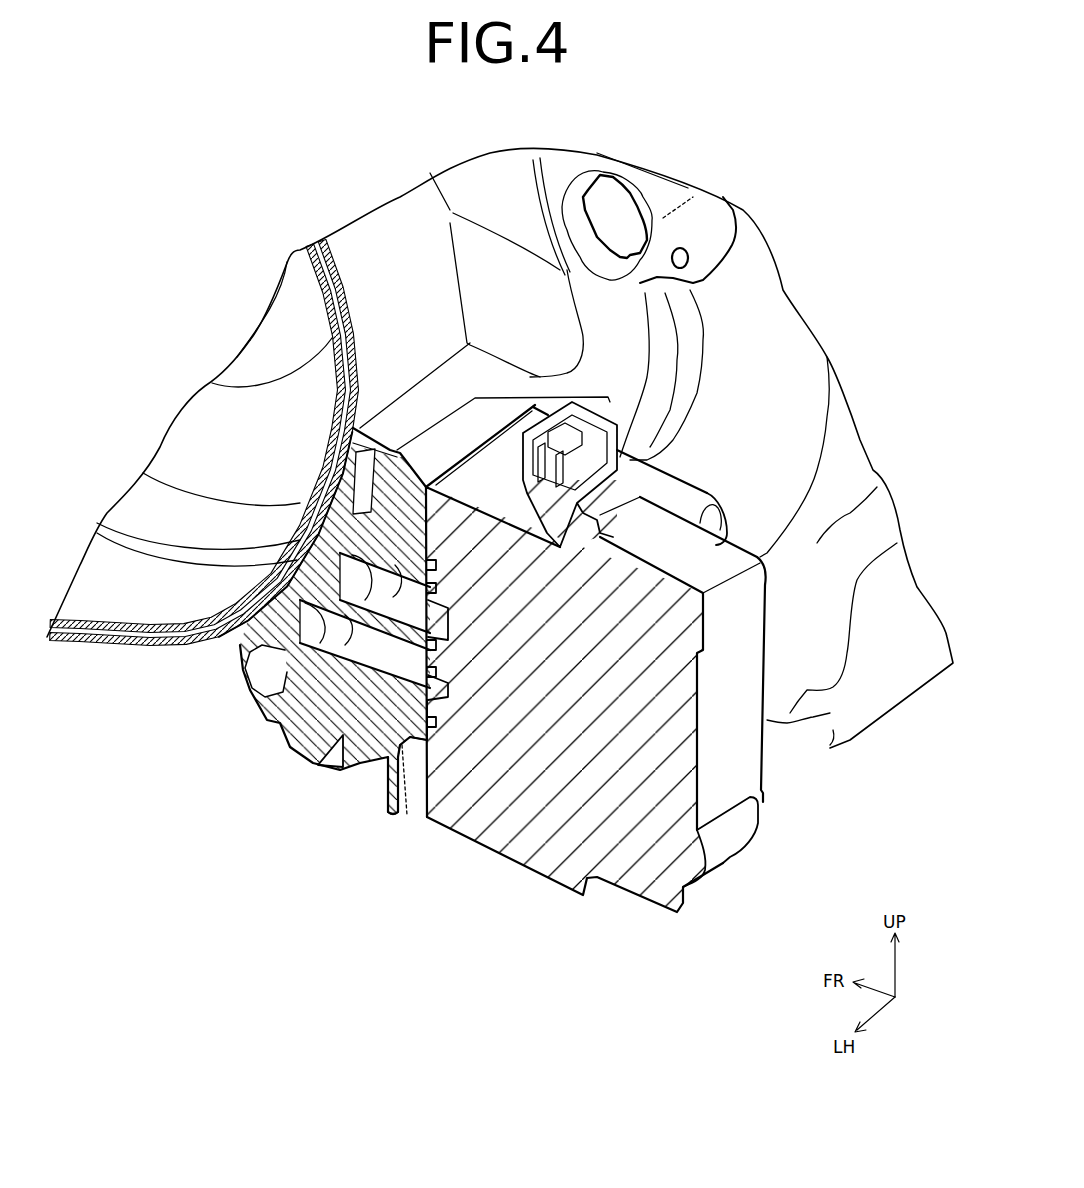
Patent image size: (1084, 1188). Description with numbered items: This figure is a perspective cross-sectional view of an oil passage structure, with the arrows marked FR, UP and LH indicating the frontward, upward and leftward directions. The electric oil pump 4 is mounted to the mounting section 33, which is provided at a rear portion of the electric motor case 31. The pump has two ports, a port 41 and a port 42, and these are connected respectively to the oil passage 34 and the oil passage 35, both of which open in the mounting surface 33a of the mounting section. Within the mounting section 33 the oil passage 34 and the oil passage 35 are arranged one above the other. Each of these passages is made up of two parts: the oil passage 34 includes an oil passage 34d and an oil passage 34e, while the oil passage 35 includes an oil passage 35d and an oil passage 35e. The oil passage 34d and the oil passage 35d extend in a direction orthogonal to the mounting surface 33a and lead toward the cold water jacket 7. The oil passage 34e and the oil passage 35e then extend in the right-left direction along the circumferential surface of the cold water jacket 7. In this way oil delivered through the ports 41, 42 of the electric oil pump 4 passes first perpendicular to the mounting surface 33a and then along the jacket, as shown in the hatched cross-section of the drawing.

The electric oil pump 4 is at (627, 873).
The cold water jacket 7 is at (107, 650).
The electric motor case 31 is at (357, 258).
The mounting section 33 is at (410, 743).
The mounting surface 33a is at (437, 733).
The oil passage 34 is at (390, 753).
The oil passage 34d is at (370, 690).
The oil passage 34e is at (375, 590).
The oil passage 35 is at (345, 745).
The oil passage 35d is at (303, 750).
The oil passage 35e is at (257, 693).
The port 41 is at (440, 600).
The port 42 is at (440, 683).